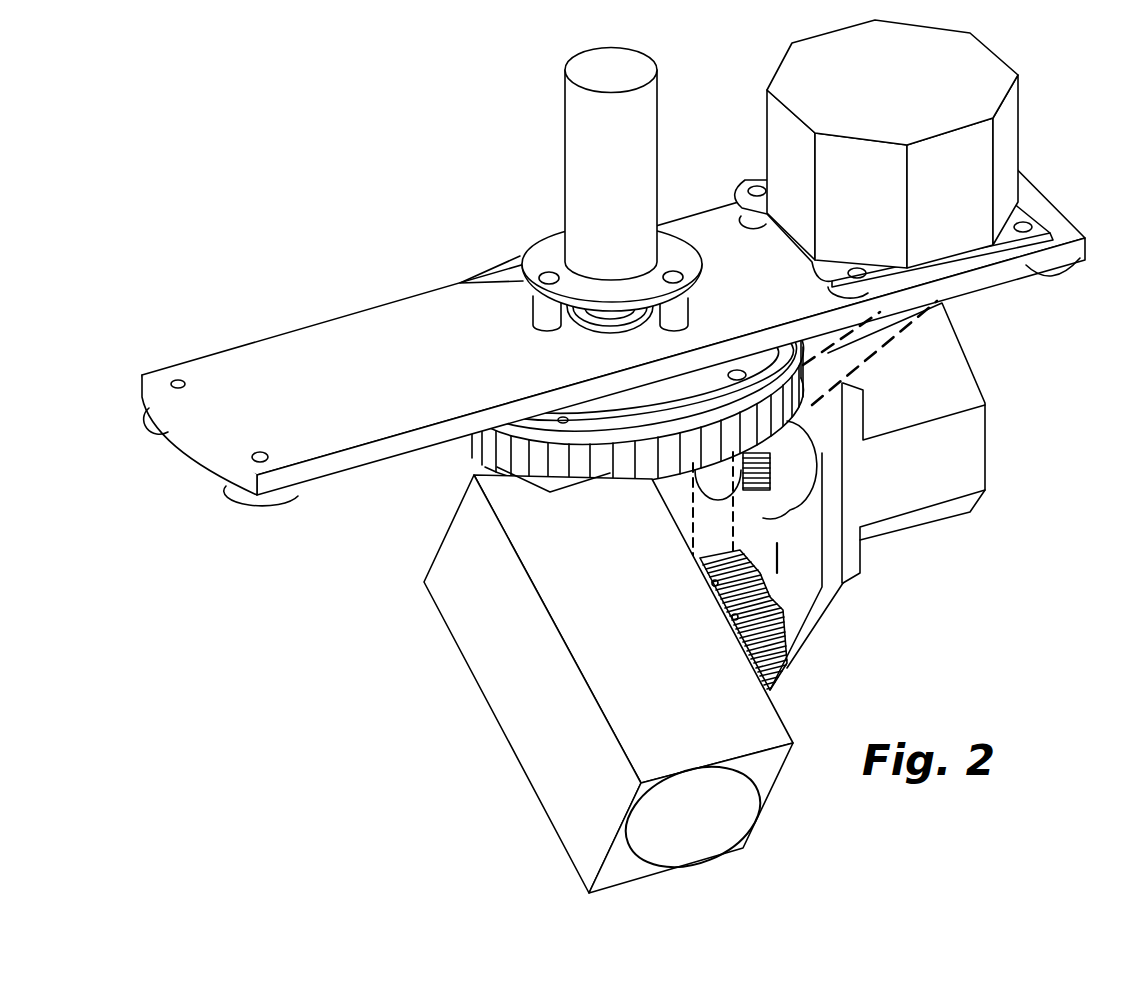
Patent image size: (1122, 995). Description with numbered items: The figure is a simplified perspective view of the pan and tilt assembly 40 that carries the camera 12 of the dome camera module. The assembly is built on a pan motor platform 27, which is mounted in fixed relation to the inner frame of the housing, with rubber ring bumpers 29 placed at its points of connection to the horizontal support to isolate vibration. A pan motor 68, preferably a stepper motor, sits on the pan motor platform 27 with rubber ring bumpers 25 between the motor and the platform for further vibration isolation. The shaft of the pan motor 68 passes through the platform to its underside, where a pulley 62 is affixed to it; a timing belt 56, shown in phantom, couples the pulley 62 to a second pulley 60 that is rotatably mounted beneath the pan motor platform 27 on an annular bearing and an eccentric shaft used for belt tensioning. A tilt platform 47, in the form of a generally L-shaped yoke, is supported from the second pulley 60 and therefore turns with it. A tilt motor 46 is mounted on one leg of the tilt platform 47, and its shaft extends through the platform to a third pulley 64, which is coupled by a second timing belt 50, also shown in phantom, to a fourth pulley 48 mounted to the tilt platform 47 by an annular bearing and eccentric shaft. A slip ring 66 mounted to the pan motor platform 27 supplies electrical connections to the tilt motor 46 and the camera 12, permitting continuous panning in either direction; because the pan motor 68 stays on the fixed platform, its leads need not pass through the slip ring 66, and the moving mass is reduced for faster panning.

The camera 12 is at (540, 762).
The rubber ring bumpers 25 is at (818, 297).
The pan motor platform 27 is at (310, 362).
The rubber ring bumpers 29 is at (290, 497).
The pan and tilt assembly 40 is at (379, 172).
The tilt motor 46 is at (962, 458).
The tilt platform 47 is at (823, 603).
The fourth pulley 48 is at (786, 670).
The second timing belt 50 is at (700, 543).
The timing belt 56 is at (878, 350).
The second pulley 60 is at (608, 482).
The pulley 62 is at (940, 302).
The third pulley 64 is at (781, 496).
The slip ring 66 is at (632, 72).
The pan motor 68 is at (990, 75).